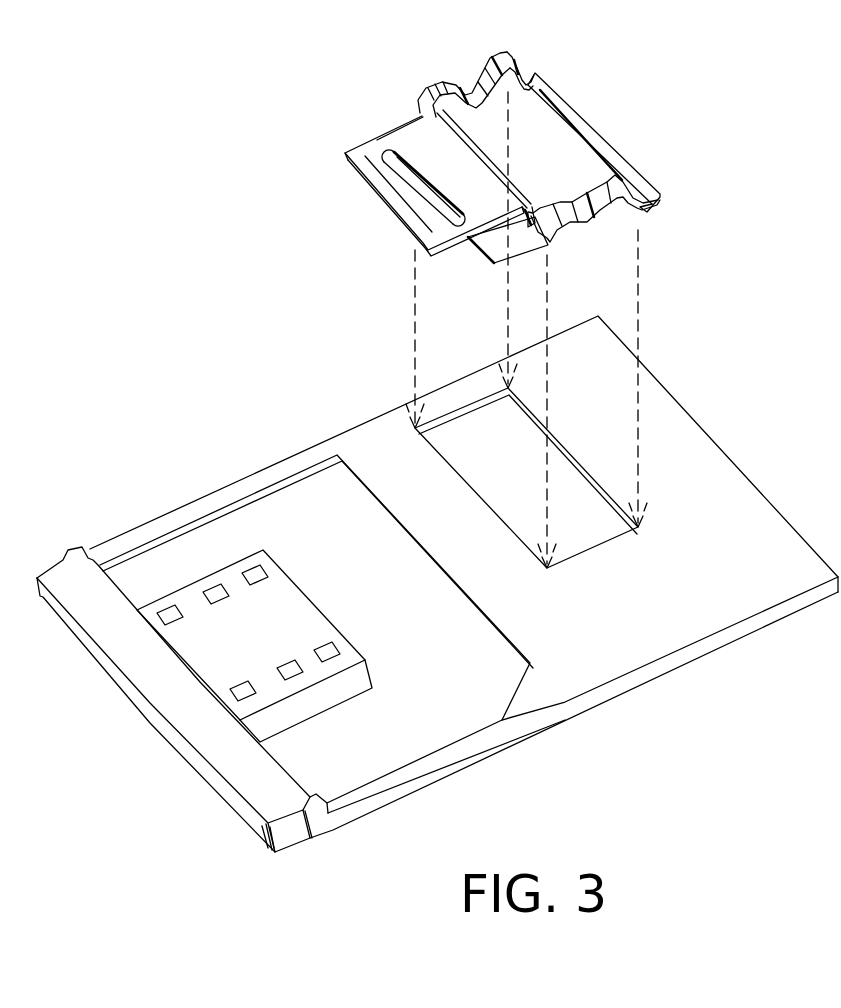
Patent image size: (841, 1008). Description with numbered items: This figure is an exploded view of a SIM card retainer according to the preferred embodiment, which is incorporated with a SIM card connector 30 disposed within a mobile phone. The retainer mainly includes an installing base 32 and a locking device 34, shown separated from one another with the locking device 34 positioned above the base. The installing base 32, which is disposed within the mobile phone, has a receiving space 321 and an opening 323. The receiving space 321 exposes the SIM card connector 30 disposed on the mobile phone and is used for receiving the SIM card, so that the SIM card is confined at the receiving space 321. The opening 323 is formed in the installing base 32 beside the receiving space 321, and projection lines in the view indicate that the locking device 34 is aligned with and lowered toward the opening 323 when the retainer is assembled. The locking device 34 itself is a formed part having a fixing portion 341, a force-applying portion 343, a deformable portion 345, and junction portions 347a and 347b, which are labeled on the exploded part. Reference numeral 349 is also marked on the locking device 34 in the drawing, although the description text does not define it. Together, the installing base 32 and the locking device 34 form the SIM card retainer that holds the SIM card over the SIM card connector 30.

The SIM card connector 30 is at (205, 658).
The installing base 32 is at (648, 755).
The receiving space 321 is at (343, 560).
The opening 323 is at (523, 480).
The locking device 34 is at (522, 194).
The fixing portion 341 is at (395, 180).
The force-applying portion 343 is at (435, 182).
The deformable portion 345 is at (508, 56).
The junction portion 347a is at (505, 242).
The junction portion 347b is at (645, 195).
The plate portion 349 is at (383, 188).